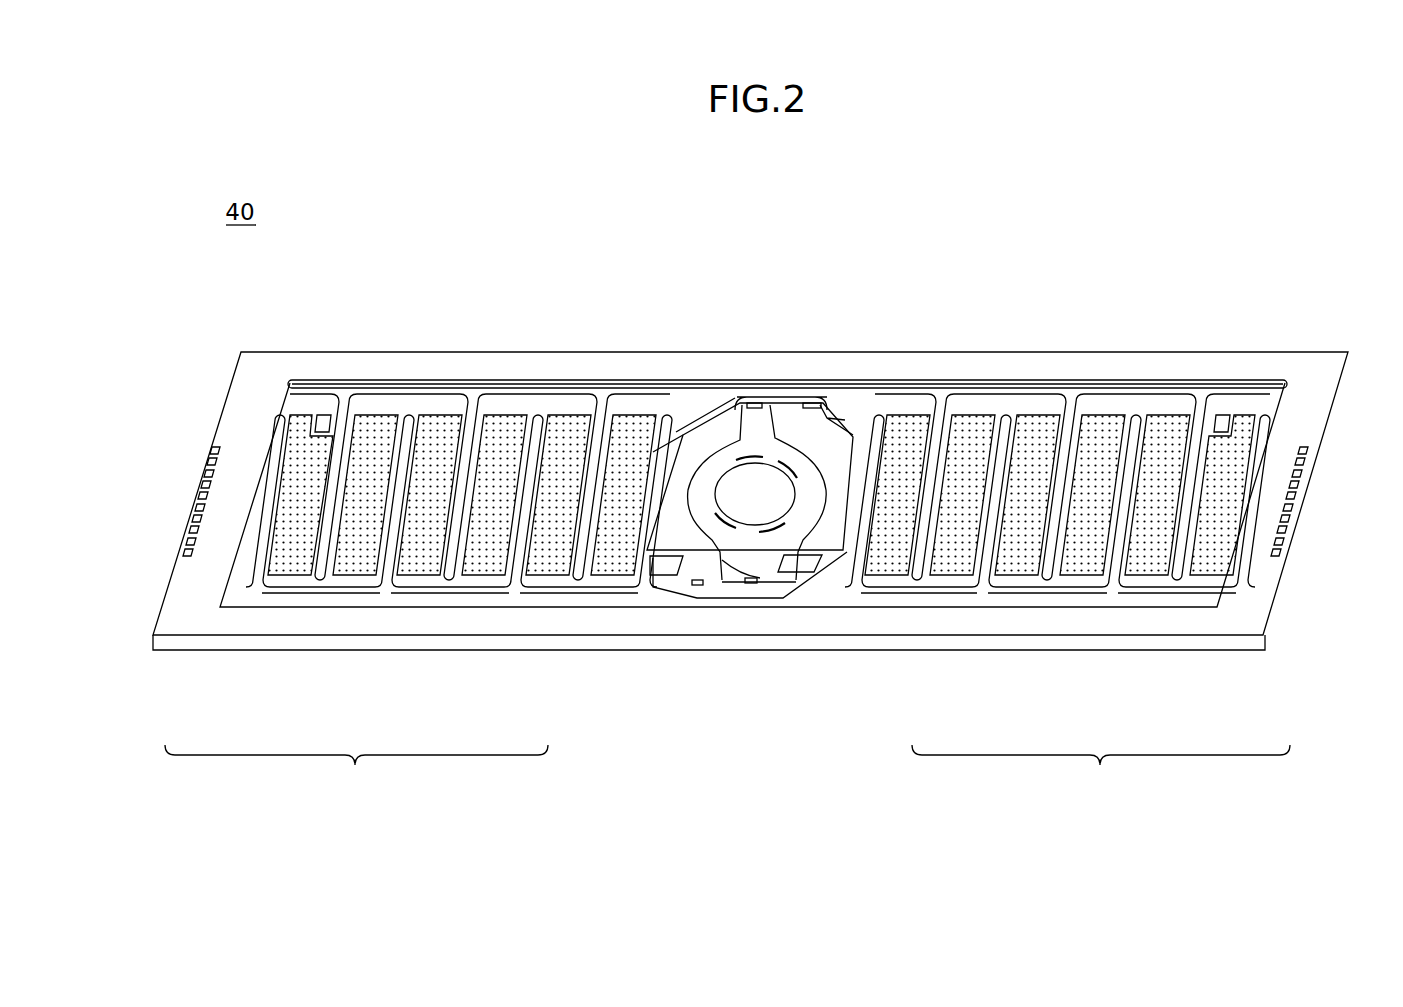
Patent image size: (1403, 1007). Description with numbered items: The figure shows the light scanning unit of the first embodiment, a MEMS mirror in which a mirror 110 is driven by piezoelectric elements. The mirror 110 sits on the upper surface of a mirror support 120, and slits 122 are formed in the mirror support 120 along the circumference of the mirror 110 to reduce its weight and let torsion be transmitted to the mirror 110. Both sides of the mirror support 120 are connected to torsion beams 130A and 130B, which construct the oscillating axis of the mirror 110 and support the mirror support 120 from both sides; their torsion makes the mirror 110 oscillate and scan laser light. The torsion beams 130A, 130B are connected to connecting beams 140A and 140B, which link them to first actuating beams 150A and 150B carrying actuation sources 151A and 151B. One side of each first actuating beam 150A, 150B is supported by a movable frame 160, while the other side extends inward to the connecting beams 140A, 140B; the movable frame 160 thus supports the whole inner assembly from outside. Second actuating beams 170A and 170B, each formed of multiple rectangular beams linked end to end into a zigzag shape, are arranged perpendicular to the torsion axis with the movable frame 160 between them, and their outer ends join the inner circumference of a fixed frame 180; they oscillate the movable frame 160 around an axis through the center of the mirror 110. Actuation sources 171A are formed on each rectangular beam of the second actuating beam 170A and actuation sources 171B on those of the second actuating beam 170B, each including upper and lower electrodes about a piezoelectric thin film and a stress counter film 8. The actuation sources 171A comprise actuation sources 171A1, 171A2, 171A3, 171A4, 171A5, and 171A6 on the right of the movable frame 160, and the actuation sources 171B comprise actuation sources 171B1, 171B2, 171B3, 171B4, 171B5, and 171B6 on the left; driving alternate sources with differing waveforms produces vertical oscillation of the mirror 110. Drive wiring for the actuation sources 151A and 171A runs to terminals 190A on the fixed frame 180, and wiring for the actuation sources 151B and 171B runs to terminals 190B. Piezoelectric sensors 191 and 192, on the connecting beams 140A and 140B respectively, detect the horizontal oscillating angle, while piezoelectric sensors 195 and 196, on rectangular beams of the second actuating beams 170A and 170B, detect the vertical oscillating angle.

The stress counter film 8 is at (1160, 412).
The mirror 110 is at (757, 494).
The mirror support 120 is at (815, 405).
The slits 122 is at (757, 537).
The torsion beam 130A is at (731, 562).
The torsion beam 130B is at (776, 430).
The connecting beam 140A is at (683, 553).
The connecting beam 140B is at (826, 420).
The first actuating beam 150A is at (793, 557).
The first actuating beam 150B is at (676, 556).
The actuation source 151A is at (843, 425).
The actuation source 151B is at (748, 400).
The movable frame 160 is at (787, 420).
The second actuating beam 170A is at (886, 582).
The second actuating beam 170B is at (640, 590).
The actuation sources 171A is at (1101, 773).
The actuation source 171A1 is at (897, 565).
The actuation source 171A2 is at (960, 548).
The actuation source 171A3 is at (1025, 548).
The actuation source 171A4 is at (1088, 549).
The actuation source 171A5 is at (1153, 548).
The actuation source 171A6 is at (1215, 558).
The actuation sources 171B is at (356, 773).
The actuation source 171B1 is at (605, 560).
The actuation source 171B2 is at (547, 558).
The actuation source 171B3 is at (480, 560).
The actuation source 171B4 is at (418, 558).
The actuation source 171B5 is at (357, 557).
The actuation source 171B6 is at (289, 556).
The fixed frame 180 is at (1256, 573).
The terminals 190A is at (1322, 443).
The terminals 190B is at (205, 440).
The piezoelectric sensor 191 is at (700, 582).
The piezoelectric sensor 192 is at (697, 450).
The piezoelectric sensor 195 is at (1220, 418).
The piezoelectric sensor 196 is at (323, 418).